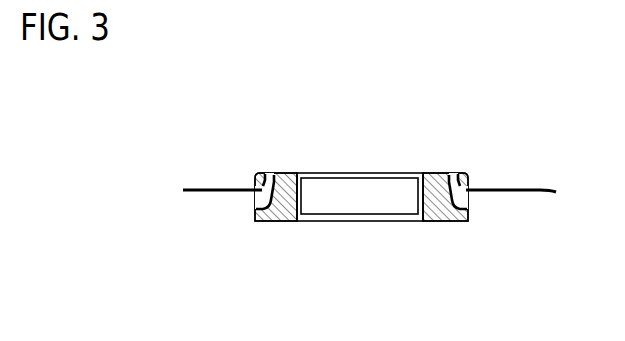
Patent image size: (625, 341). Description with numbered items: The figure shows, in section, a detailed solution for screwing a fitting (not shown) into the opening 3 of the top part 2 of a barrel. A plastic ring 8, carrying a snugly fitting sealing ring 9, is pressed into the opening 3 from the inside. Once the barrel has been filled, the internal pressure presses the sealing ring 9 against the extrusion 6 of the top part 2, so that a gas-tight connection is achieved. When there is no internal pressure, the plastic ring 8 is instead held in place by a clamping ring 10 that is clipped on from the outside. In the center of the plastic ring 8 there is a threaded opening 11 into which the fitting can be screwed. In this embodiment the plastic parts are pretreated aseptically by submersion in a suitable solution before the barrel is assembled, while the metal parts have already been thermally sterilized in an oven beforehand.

The top part 2 is at (220, 188).
The opening 3 is at (403, 166).
The extrusion 6 is at (260, 200).
The plastic ring 8 is at (433, 213).
The sealing ring 9 is at (264, 221).
The clamping ring 10 is at (468, 173).
The threaded opening 11 is at (305, 176).